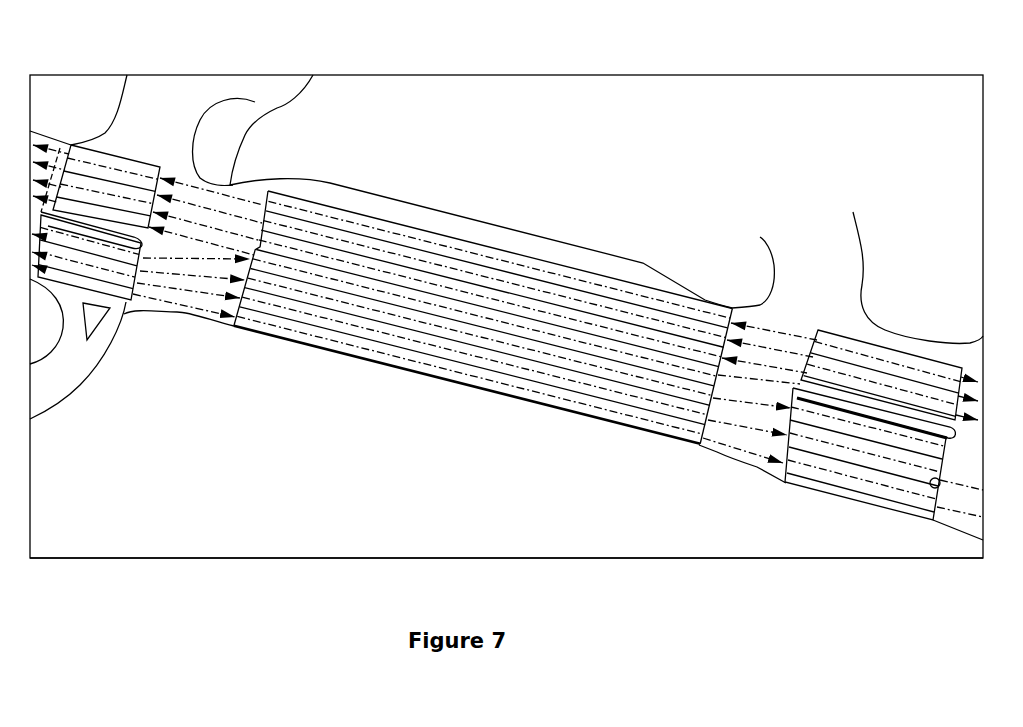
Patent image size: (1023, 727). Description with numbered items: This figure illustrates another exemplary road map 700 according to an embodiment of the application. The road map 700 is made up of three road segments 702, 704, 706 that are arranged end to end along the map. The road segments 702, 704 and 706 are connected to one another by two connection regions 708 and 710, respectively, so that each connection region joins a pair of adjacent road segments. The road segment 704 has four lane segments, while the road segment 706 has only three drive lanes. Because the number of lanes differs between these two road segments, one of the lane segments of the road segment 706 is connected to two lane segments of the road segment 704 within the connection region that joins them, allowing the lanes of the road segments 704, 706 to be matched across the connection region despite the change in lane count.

The road map 700 is at (923, 559).
The road segment 702 is at (810, 493).
The road segment 704 is at (333, 352).
The road segment 706 is at (124, 314).
The connection region 708 is at (743, 463).
The connection region 710 is at (313, 75).